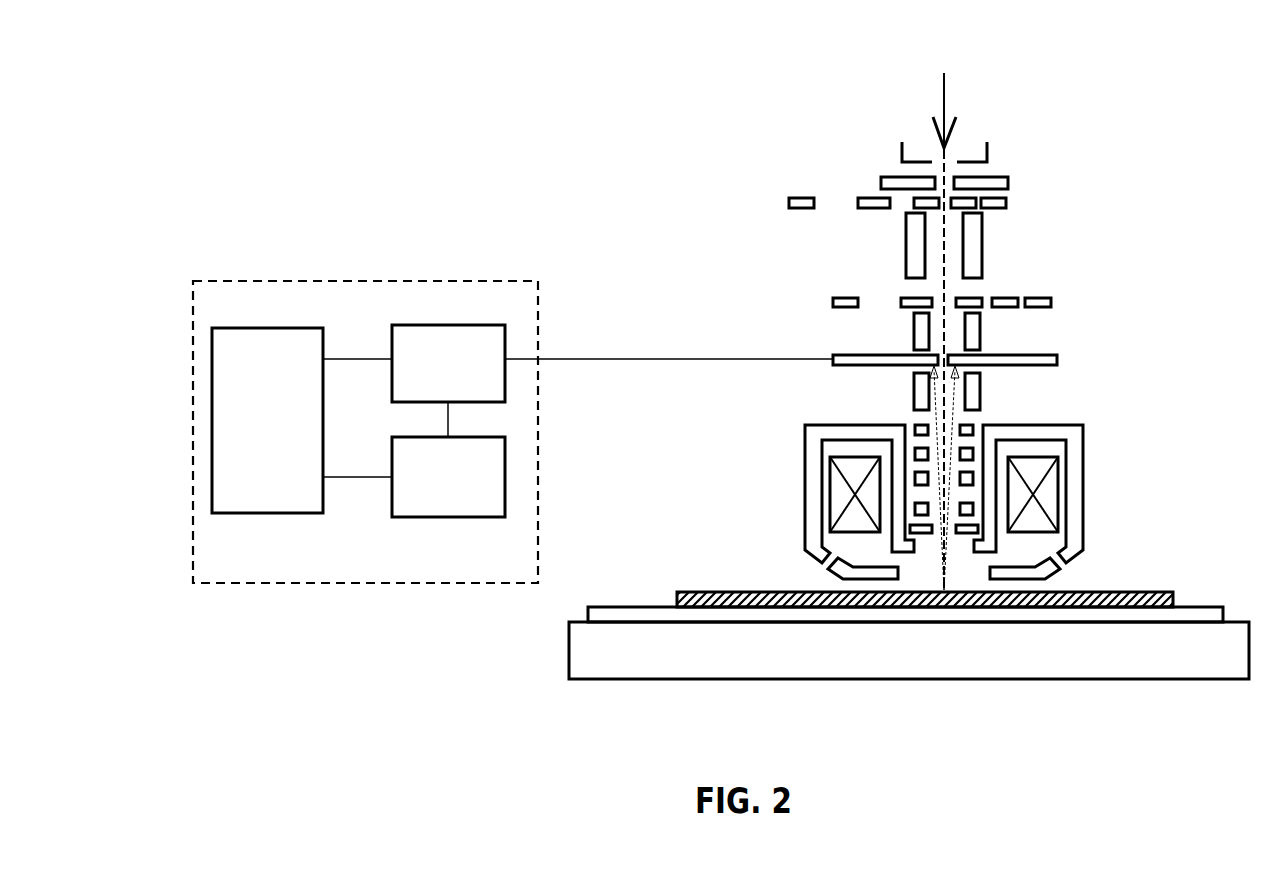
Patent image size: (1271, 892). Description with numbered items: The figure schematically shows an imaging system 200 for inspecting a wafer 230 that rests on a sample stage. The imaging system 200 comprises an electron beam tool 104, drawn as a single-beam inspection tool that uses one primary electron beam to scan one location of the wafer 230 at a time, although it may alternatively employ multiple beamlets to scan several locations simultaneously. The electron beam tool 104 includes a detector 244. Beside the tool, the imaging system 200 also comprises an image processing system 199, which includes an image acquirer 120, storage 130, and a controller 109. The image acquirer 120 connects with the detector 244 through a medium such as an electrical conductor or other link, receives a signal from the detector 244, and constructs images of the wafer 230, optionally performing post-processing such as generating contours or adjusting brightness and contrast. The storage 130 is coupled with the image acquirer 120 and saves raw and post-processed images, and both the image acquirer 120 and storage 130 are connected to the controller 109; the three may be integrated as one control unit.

The imaging system 200 is at (333, 56).
The electron beam tool 104 is at (828, 138).
The image processing system 199 is at (237, 280).
The controller 109 is at (267, 420).
The image acquirer 120 is at (448, 363).
The storage 130 is at (448, 477).
The detector 244 is at (1072, 354).
The wafer 230 is at (1108, 582).